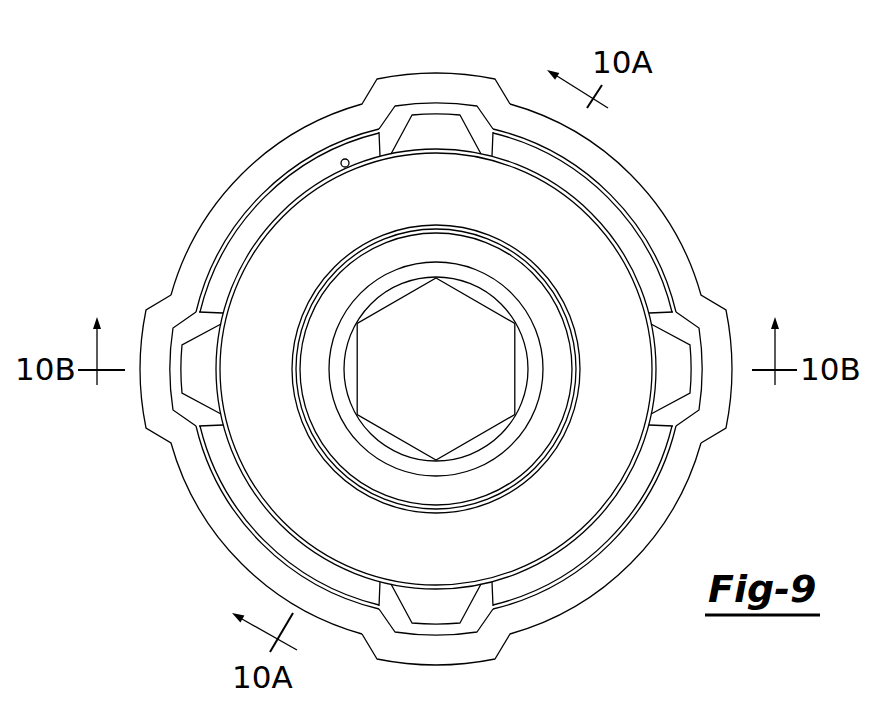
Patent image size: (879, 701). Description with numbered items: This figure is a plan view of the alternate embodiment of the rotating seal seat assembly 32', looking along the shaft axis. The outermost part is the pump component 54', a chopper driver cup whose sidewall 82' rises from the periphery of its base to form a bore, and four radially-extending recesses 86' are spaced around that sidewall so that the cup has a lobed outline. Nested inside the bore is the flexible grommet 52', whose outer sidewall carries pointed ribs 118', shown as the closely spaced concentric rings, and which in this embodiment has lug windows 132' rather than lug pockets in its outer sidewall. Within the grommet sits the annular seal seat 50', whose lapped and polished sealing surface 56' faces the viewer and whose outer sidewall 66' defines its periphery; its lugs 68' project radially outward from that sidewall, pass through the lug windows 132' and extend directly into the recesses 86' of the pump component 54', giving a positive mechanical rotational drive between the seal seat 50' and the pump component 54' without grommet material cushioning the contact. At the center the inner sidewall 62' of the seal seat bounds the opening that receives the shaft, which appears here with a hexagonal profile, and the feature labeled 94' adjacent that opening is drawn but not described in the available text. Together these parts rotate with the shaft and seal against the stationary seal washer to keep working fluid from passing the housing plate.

The rotating seal seat assembly 32' is at (436, 332).
The seal seat 50' is at (362, 366).
The grommet 52' is at (454, 362).
The pump component 54' is at (436, 341).
The sealing surface 56' is at (317, 549).
The inner sidewall 62' is at (433, 344).
The outer sidewall 66' is at (381, 179).
The lugs 68' is at (153, 374).
The sidewall 82' is at (413, 369).
The recesses 86' is at (418, 93).
The hexagonal drive socket 94' is at (492, 377).
The ribs 118' is at (480, 369).
The lug windows 132' is at (705, 339).